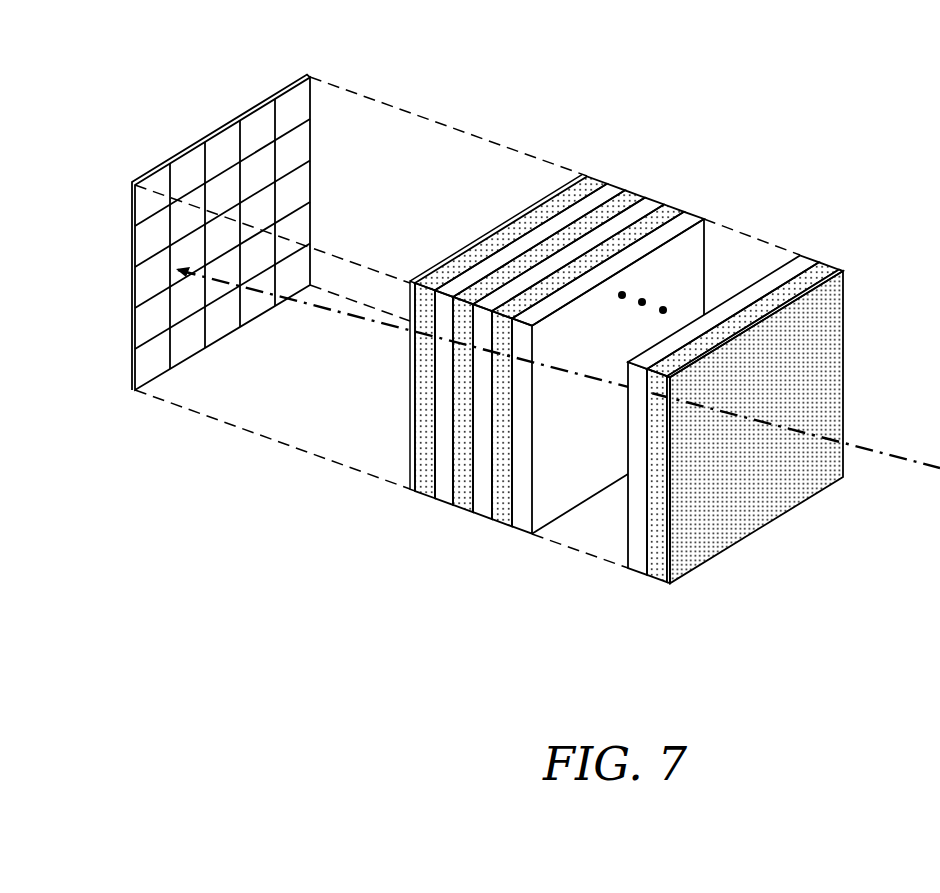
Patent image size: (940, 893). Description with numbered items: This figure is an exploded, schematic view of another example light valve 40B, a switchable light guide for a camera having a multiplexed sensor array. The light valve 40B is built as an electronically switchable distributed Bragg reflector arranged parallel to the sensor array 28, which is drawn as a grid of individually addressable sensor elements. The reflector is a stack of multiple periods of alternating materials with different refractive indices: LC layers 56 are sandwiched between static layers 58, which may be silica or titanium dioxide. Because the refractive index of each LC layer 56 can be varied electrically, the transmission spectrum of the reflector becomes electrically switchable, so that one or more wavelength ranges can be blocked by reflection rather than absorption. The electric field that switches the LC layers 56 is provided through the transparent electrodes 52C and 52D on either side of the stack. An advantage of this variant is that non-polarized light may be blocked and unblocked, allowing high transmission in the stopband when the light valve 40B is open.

The light valve 40B is at (480, 108).
The sensor array 28 is at (132, 366).
The transparent electrode 52D is at (410, 412).
The transparent electrode 52C is at (847, 405).
The LC layer 56 is at (598, 127).
The static layer 58 is at (443, 506).